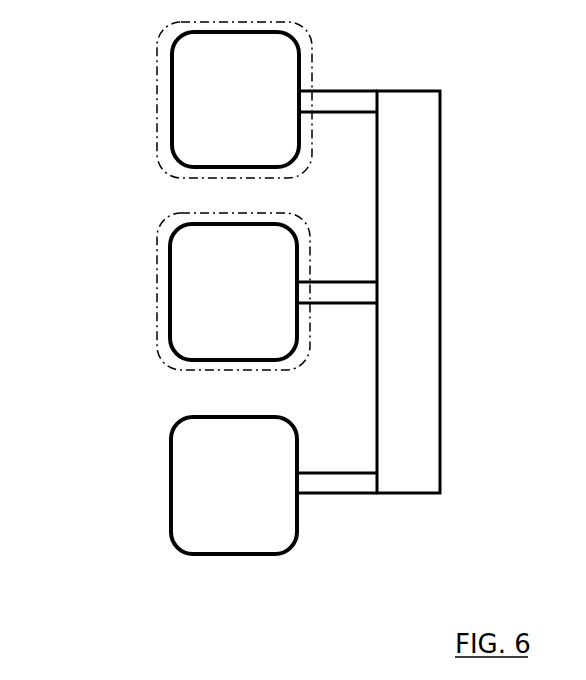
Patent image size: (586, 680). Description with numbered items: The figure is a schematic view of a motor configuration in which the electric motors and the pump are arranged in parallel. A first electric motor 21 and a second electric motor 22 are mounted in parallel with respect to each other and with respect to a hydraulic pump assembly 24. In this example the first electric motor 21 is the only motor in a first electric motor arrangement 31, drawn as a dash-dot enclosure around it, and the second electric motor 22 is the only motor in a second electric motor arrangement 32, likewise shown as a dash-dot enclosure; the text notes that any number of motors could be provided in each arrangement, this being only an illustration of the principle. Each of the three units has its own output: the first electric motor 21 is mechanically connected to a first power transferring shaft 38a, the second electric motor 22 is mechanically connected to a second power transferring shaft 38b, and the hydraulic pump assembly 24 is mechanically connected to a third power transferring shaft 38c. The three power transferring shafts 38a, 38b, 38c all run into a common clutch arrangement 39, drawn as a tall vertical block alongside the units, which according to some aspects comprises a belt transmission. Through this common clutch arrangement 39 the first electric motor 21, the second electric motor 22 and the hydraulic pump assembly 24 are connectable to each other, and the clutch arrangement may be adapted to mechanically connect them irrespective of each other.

The first electric motor 21 is at (250, 117).
The second electric motor 22 is at (248, 302).
The hydraulic pump assembly 24 is at (250, 501).
The first electric motor arrangement 31 is at (157, 97).
The second electric motor arrangement 32 is at (157, 290).
The first power transferring shaft 38a is at (340, 100).
The second power transferring shaft 38b is at (333, 292).
The third power transferring shaft 38c is at (333, 483).
The common clutch arrangement 39 is at (426, 309).